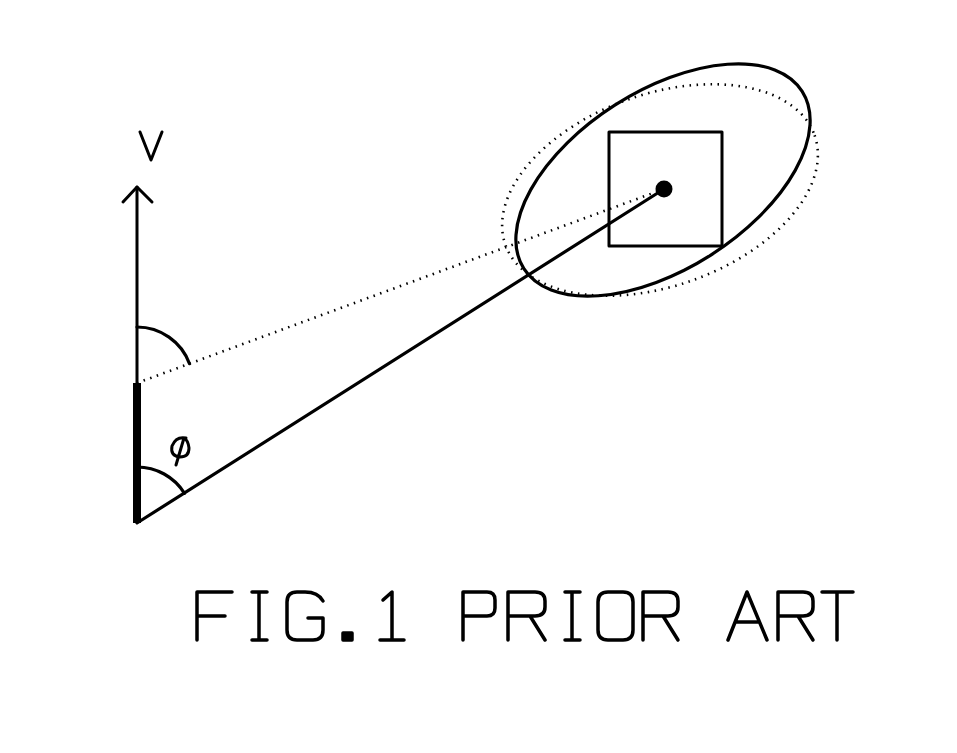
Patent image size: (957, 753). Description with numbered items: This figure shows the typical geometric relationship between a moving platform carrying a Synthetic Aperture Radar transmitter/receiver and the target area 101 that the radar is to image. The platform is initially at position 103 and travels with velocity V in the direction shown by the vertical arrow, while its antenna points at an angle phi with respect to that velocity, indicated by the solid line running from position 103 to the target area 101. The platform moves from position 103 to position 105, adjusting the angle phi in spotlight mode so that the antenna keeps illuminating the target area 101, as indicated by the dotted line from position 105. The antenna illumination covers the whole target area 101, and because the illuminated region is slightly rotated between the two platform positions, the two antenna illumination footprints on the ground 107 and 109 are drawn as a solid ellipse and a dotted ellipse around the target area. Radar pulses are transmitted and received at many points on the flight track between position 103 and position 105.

The target area 101 is at (715, 175).
The initial platform position 103 is at (87, 525).
The second platform position 105 is at (86, 397).
The antenna illumination footprint 107 is at (900, 77).
The antenna illumination footprint 109 is at (824, 278).